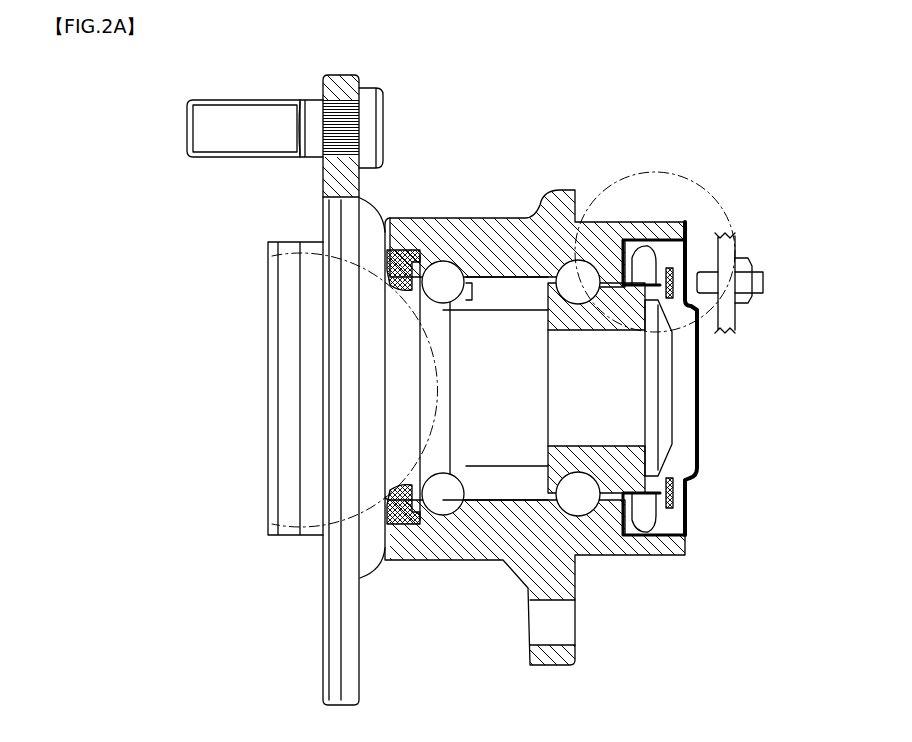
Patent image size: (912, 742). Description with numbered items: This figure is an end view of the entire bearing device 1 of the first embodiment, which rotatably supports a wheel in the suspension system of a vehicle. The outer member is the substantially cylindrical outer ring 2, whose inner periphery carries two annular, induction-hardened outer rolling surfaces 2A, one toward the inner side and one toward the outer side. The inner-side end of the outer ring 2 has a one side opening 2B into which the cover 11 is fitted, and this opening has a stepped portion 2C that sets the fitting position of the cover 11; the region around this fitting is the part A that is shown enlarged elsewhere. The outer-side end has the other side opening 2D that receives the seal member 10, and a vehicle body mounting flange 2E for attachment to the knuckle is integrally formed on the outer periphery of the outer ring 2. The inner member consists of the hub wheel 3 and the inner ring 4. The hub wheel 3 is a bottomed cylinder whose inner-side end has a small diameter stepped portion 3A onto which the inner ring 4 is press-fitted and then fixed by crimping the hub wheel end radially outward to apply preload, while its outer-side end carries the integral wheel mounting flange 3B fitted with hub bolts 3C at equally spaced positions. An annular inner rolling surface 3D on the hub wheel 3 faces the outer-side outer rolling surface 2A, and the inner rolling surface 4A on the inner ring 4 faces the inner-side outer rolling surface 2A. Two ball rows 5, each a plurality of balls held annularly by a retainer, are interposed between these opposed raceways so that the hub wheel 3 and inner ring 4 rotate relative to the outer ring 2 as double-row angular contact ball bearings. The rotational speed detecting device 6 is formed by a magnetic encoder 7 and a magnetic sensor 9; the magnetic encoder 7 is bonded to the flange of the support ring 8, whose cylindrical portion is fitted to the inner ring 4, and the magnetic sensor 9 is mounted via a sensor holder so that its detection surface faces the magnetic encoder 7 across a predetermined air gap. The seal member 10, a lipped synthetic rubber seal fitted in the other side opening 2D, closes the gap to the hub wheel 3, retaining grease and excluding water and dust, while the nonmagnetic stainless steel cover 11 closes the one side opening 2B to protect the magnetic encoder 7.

The bearing device 1 is at (88, 66).
The outer ring 2 is at (482, 225).
The outer rolling surfaces 2A is at (520, 560).
The one side opening 2B is at (686, 535).
The stepped portion 2C is at (615, 560).
The other side opening 2D is at (414, 528).
The vehicle body mounting flange 2E is at (577, 658).
The hub wheel 3 is at (270, 400).
The small diameter stepped portion 3A is at (615, 450).
The wheel mounting flange 3B is at (330, 692).
The hub bolts 3C is at (188, 128).
The inner rolling surface 3D is at (450, 478).
The inner ring 4 is at (665, 478).
The inner rolling surface 4A is at (580, 448).
The ball rows 5 is at (441, 262).
The rotational speed detecting device 6 is at (770, 228).
The magnetic encoder 7 is at (670, 266).
The support ring 8 is at (642, 262).
The magnetic sensor 9 is at (766, 283).
The seal member 10 is at (405, 245).
The cover 11 is at (698, 410).
The part A is at (722, 178).